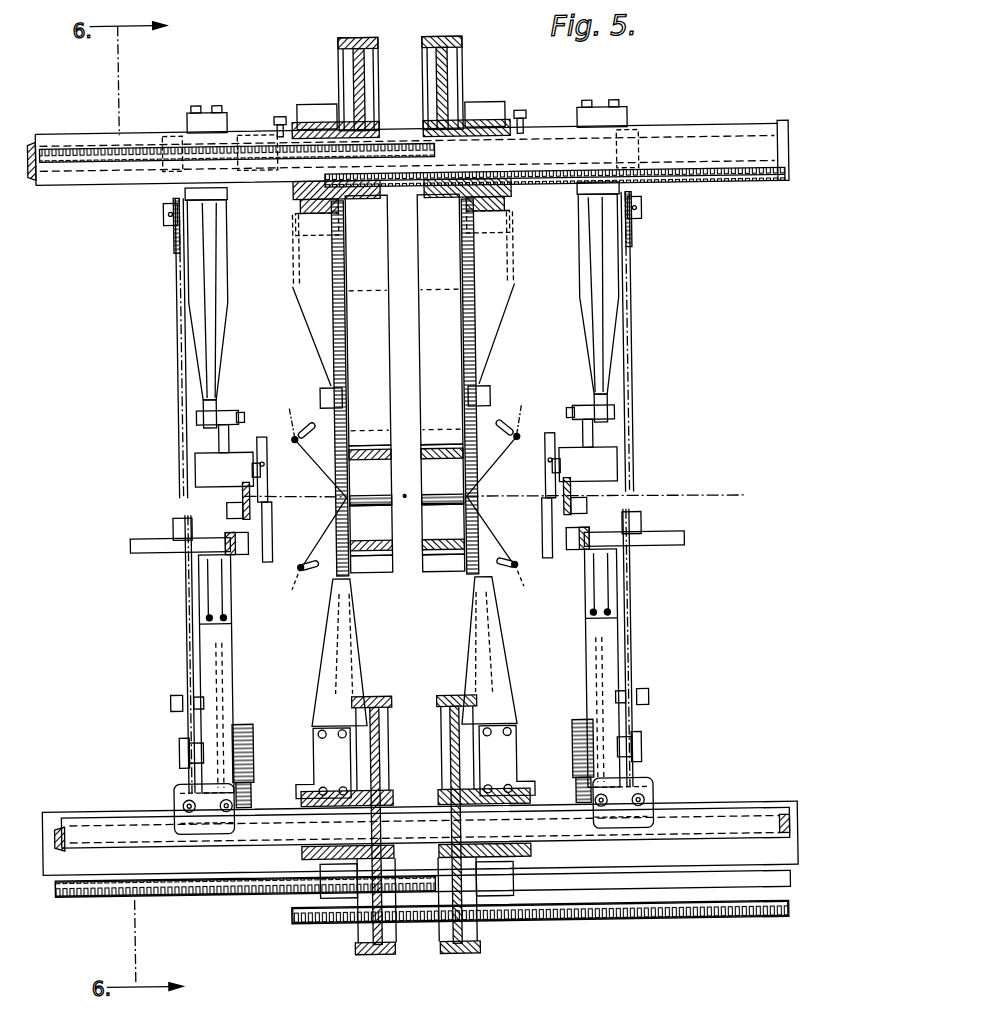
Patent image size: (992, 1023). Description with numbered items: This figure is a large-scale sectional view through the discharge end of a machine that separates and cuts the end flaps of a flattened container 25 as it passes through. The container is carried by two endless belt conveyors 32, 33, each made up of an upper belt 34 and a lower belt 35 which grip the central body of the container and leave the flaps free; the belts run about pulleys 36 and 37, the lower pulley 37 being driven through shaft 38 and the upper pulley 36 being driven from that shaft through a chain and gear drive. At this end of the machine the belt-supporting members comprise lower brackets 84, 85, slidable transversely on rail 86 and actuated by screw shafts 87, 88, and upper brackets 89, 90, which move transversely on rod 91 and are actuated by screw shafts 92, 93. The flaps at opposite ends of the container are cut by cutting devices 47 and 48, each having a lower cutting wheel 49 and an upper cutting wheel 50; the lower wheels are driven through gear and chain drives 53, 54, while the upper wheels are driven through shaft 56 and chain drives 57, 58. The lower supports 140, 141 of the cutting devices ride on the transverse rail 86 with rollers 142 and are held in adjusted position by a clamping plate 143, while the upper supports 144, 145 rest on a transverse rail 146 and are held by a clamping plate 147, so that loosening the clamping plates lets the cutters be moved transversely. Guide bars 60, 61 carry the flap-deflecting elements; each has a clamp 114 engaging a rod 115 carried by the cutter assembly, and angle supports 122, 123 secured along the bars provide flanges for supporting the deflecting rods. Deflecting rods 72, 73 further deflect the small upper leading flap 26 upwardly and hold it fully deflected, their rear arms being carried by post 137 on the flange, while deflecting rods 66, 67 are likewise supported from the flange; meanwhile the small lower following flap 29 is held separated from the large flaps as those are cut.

The flattened container 25 is at (404, 495).
The small upper leading flap 26 is at (409, 442).
The small lower following flap 29 is at (297, 580).
The conveyor 32 is at (426, 505).
The conveyor 33 is at (395, 475).
The upper belt 34 is at (425, 430).
The lower belt 35 is at (377, 573).
The pulley 36 is at (418, 52).
The pulley 37 is at (443, 742).
The shaft 38 is at (95, 818).
The cutting device 47 is at (545, 493).
The cutting device 48 is at (320, 492).
The lower cutting wheel 49 is at (272, 560).
The upper cutting wheel 50 is at (261, 435).
The gear and chain drive 53 is at (634, 652).
The gear and chain drive 54 is at (185, 650).
The shaft 56 is at (36, 141).
The chain drive 57 is at (634, 345).
The chain drive 58 is at (180, 345).
The guide bar 60 is at (240, 490).
The guide bar 61 is at (574, 490).
The deflecting rod 66 is at (300, 563).
The deflecting rod 67 is at (516, 561).
The deflecting rod 72 is at (303, 434).
The deflecting rod 73 is at (510, 430).
The lower bracket 84 is at (358, 662).
The lower bracket 85 is at (472, 649).
The rail 86 is at (48, 813).
The screw shaft 87 is at (241, 896).
The screw shaft 88 is at (660, 913).
The upper bracket 89 is at (296, 270).
The upper bracket 90 is at (512, 270).
The rod 91 is at (144, 183).
The screw shaft 92 is at (78, 150).
The screw shaft 93 is at (787, 187).
The clamp 114 is at (241, 553).
The rod 115 is at (146, 540).
The angle support 122 is at (228, 509).
The angle support 123 is at (587, 509).
The post 137 is at (243, 496).
The lower support 140 is at (588, 668).
The lower support 141 is at (228, 678).
The roller 142 is at (172, 796).
The clamping plate 143 is at (215, 853).
The upper support 144 is at (590, 242).
The upper support 145 is at (228, 246).
The transverse rail 146 is at (256, 135).
The clamping plate 147 is at (225, 101).